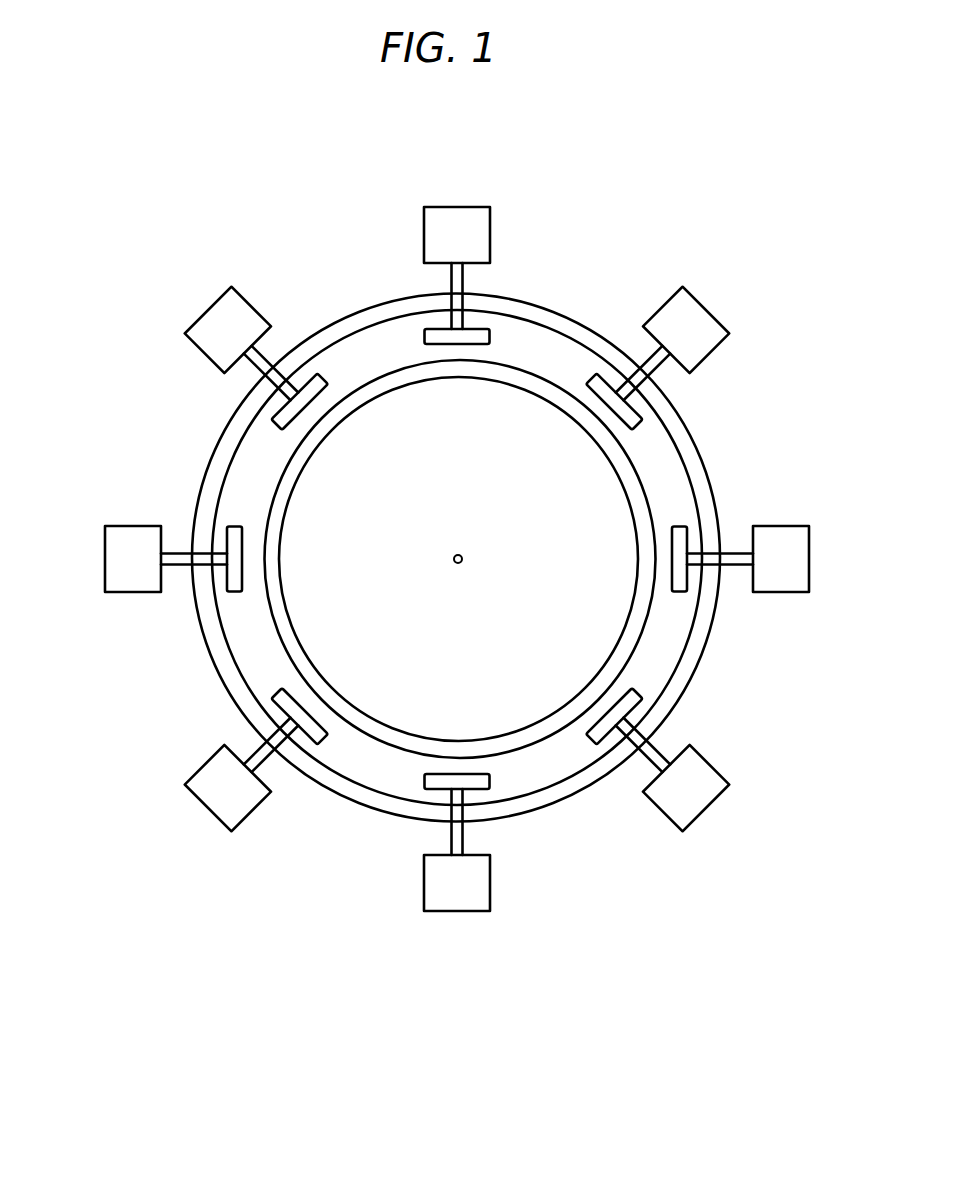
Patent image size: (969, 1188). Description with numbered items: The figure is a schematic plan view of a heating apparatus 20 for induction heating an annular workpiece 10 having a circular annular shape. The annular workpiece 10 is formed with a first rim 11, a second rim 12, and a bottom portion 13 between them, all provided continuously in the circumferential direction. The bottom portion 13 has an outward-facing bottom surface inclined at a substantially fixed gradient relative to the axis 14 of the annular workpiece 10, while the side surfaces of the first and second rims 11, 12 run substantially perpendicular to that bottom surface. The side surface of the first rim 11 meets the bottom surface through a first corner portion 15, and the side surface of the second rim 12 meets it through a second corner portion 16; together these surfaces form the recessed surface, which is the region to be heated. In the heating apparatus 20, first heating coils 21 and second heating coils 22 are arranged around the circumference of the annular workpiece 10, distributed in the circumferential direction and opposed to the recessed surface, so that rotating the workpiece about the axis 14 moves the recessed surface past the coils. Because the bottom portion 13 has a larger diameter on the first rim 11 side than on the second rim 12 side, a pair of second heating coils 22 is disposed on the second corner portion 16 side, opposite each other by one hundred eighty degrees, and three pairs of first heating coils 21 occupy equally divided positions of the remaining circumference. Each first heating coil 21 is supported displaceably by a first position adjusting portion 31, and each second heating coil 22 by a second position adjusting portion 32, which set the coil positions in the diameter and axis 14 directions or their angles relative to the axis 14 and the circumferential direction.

The annular workpiece 10 is at (505, 589).
The first rim 11 is at (502, 589).
The second rim 12 is at (630, 640).
The bottom portion 13 is at (532, 621).
The axis 14 is at (462, 557).
The first corner portion 15 is at (572, 794).
The second corner portion 16 is at (540, 740).
The heating apparatus 20 is at (423, 563).
The first heating coil 21 is at (303, 377).
The second heating coil 22 is at (475, 328).
The first position adjusting portion 31 is at (207, 309).
The second position adjusting portion 32 is at (459, 207).